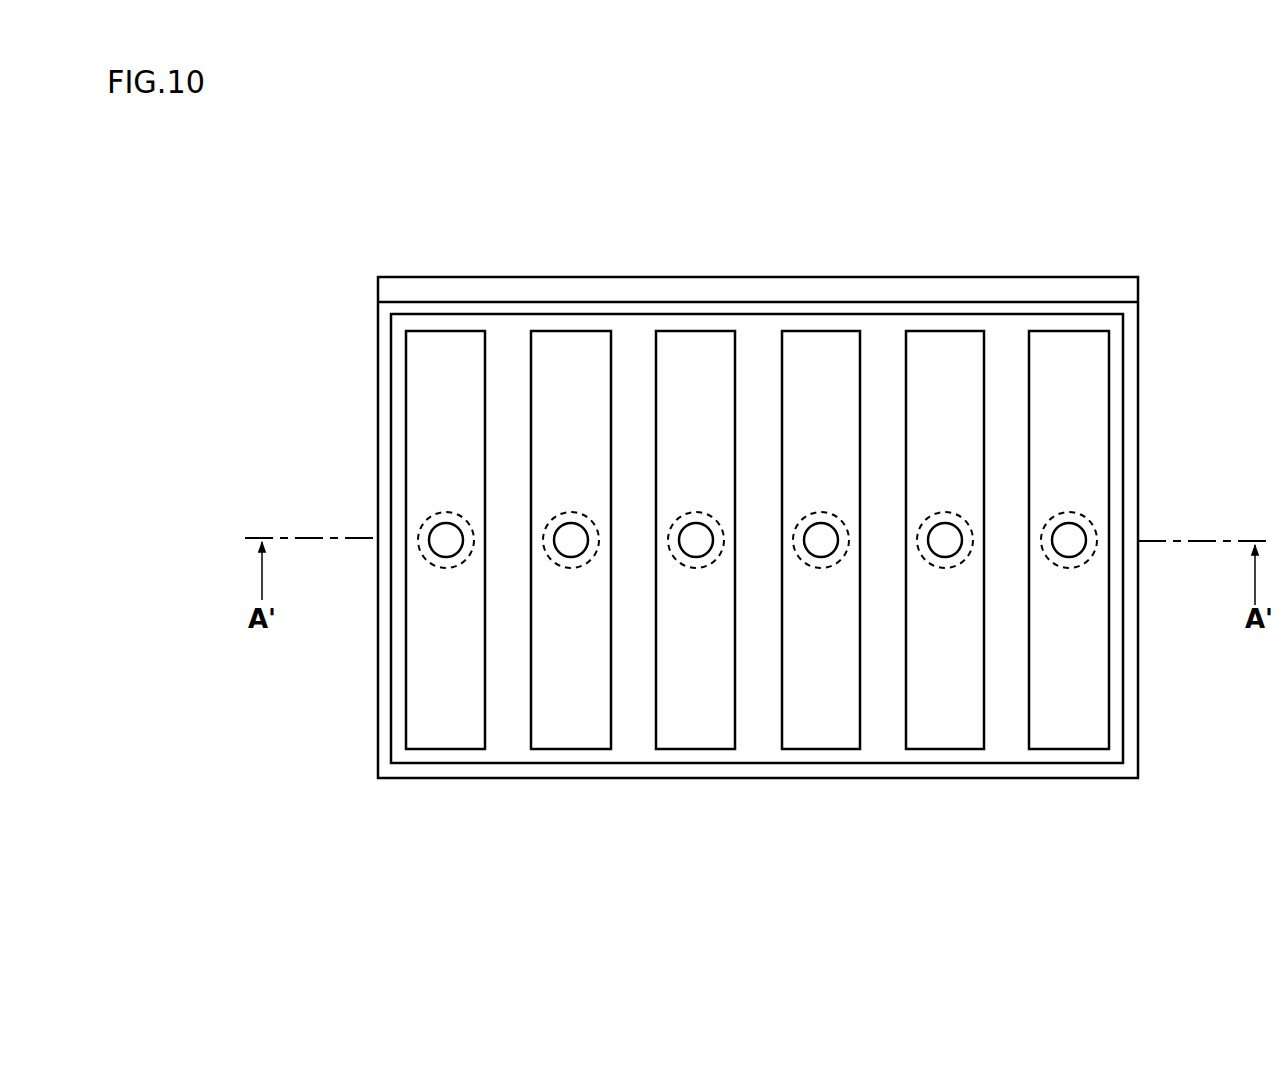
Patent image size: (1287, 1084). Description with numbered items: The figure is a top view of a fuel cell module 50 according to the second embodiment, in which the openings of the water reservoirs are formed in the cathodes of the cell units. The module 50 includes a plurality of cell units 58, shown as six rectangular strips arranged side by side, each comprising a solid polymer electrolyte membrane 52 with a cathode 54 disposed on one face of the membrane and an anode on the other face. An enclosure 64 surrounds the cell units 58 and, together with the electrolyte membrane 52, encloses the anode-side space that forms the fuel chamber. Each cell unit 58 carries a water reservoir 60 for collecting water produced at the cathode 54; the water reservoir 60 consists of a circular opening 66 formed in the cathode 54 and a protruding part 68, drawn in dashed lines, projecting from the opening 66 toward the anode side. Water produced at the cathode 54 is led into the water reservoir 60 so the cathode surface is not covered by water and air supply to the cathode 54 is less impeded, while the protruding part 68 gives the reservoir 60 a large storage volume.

The fuel cell module 50 is at (1008, 250).
The solid polymer electrolyte membrane 52 is at (1115, 353).
The cathode 54 is at (1085, 635).
The cell unit 58 is at (1069, 752).
The water reservoir 60 is at (1063, 521).
The enclosure 64 is at (1138, 690).
The circular opening 66 is at (1075, 536).
The protruding part 68 is at (1079, 511).